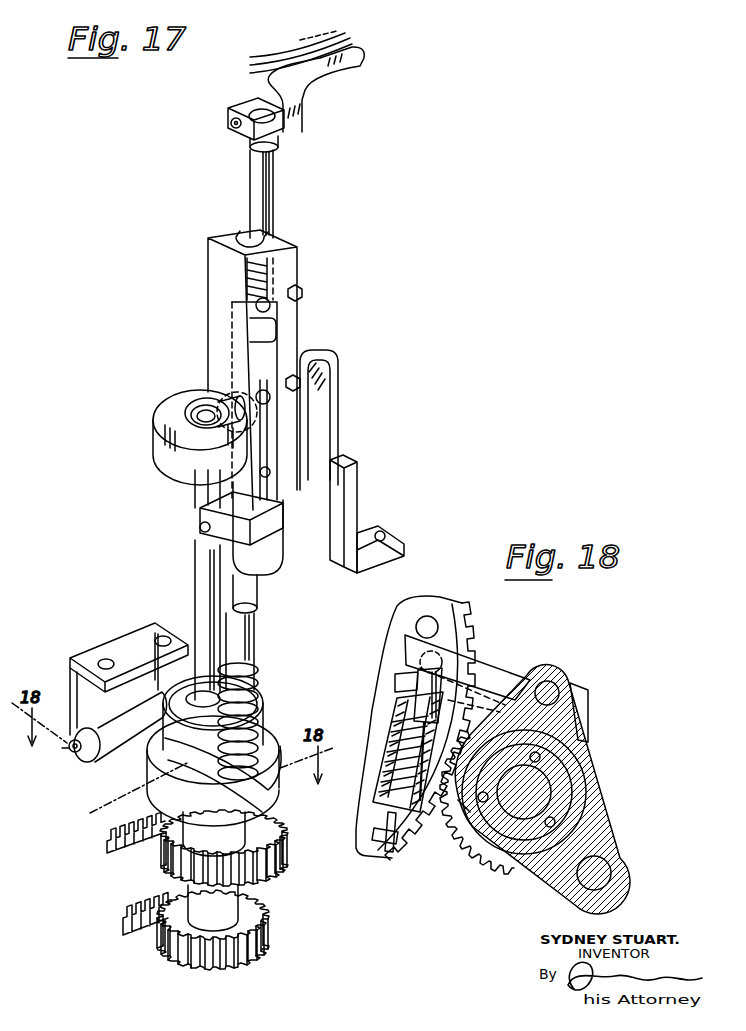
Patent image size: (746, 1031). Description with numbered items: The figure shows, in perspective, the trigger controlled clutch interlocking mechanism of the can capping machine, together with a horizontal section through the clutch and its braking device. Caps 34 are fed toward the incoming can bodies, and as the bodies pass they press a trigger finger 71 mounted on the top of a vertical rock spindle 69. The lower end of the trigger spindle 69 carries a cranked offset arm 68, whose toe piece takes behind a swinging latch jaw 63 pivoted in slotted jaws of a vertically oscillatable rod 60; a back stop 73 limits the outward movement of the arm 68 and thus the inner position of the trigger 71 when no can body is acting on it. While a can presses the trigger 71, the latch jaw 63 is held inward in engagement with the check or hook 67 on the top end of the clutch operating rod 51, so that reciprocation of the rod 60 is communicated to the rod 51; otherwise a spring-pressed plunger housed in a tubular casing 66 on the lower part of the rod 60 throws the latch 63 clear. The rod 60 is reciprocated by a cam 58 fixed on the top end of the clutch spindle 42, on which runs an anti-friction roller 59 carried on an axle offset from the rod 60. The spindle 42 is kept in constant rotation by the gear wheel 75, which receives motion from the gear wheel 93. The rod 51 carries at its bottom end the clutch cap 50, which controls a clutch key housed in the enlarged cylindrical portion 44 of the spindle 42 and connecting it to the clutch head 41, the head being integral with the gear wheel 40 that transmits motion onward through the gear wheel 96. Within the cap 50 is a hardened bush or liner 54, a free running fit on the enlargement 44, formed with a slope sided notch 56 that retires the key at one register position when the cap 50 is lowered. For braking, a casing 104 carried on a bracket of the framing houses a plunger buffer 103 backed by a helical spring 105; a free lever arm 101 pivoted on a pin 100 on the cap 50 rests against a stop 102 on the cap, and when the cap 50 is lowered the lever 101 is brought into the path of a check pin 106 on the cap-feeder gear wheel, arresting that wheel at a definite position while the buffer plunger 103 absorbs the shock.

In FIG. 17, the caps 34 is at (257, 58).
In FIG. 17, the trigger finger 71 is at (352, 62).
In FIG. 17, the vertical rock spindle 69 is at (273, 190).
In FIG. 17, the cranked offset arm 68 is at (316, 393).
In FIG. 17, the vertically oscillatable rod 60 is at (272, 445).
In FIG. 17, the cam 58 is at (158, 436).
In FIG. 17, the anti-friction roller 59 is at (222, 428).
In FIG. 17, the swinging latch jaw 63 is at (270, 540).
In FIG. 17, the check or hook 67 is at (247, 598).
In FIG. 17, the tubular casing 66 is at (200, 516).
In FIG. 17, the clutch spindle 42 is at (196, 558).
In FIG. 17, the back stop 73 is at (357, 486).
In FIG. 17, the clutch operating rod 51 is at (247, 664).
In FIG. 18, the clutch operating rod 51 is at (624, 869).
In FIG. 17, the clutch cap 50 is at (265, 692).
In FIG. 18, the clutch cap 50 is at (613, 821).
In FIG. 17, the clutch head 41 is at (175, 818).
In FIG. 17, the casing 104 is at (125, 692).
In FIG. 18, the casing 104 is at (386, 754).
In FIG. 17, the gear wheel 40 is at (250, 870).
In FIG. 18, the gear wheel 40 is at (490, 860).
In FIG. 17, the gear wheel 96 is at (110, 834).
In FIG. 18, the gear wheel 96 is at (470, 637).
In FIG. 17, the gear wheel 93 is at (124, 914).
In FIG. 17, the gear wheel 75 is at (265, 928).
In FIG. 18, the check pins 106 is at (416, 626).
In FIG. 18, the free lever arm 101 is at (492, 676).
In FIG. 18, the pin 100 is at (563, 684).
In FIG. 18, the plunger buffer 103 is at (414, 681).
In FIG. 18, the stop 102 is at (588, 708).
In FIG. 18, the helical spring 105 is at (393, 781).
In FIG. 18, the hardened fixed bush 54 is at (578, 790).
In FIG. 18, the enlarged cylindrical portion 44 is at (540, 793).
In FIG. 18, the slope sided notch 56 is at (458, 820).